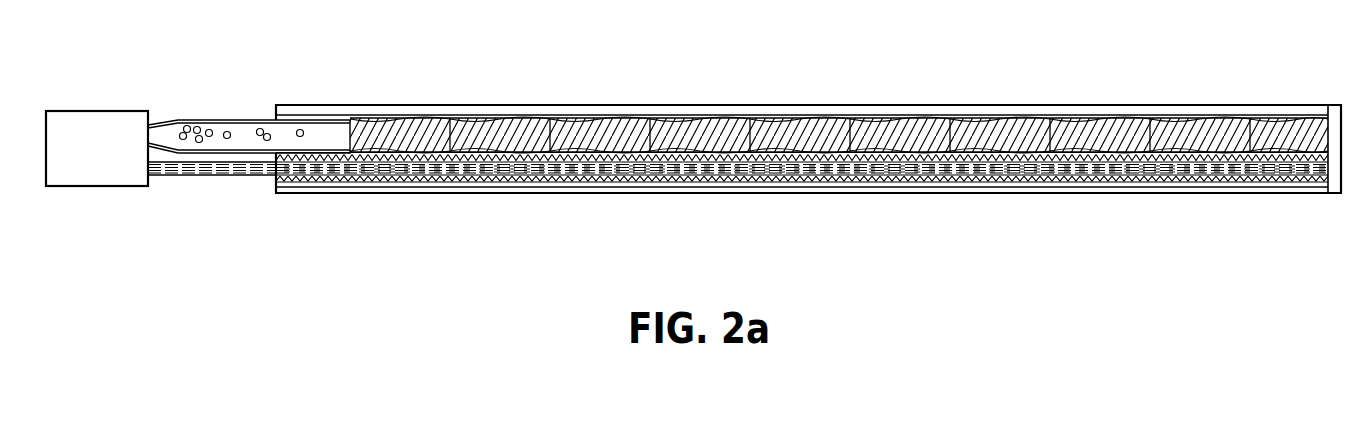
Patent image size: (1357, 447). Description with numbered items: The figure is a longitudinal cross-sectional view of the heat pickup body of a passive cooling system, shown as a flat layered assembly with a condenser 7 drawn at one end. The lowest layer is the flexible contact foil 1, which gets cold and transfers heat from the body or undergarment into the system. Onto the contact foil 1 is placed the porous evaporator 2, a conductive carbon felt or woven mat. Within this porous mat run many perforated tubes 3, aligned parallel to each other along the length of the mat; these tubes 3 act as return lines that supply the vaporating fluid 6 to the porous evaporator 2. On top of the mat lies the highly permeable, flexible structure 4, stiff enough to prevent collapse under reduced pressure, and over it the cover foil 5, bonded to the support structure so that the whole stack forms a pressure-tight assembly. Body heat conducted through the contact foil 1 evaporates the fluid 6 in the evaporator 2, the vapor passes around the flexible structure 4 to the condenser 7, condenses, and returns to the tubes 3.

The contact foil 1 is at (1157, 191).
The porous evaporator 2 is at (847, 174).
The perforated tubes 3 is at (297, 176).
The flexible structure 4 is at (1162, 140).
The cover foil 5 is at (833, 105).
The vaporating fluid 6 is at (250, 170).
The condenser 7 is at (78, 128).